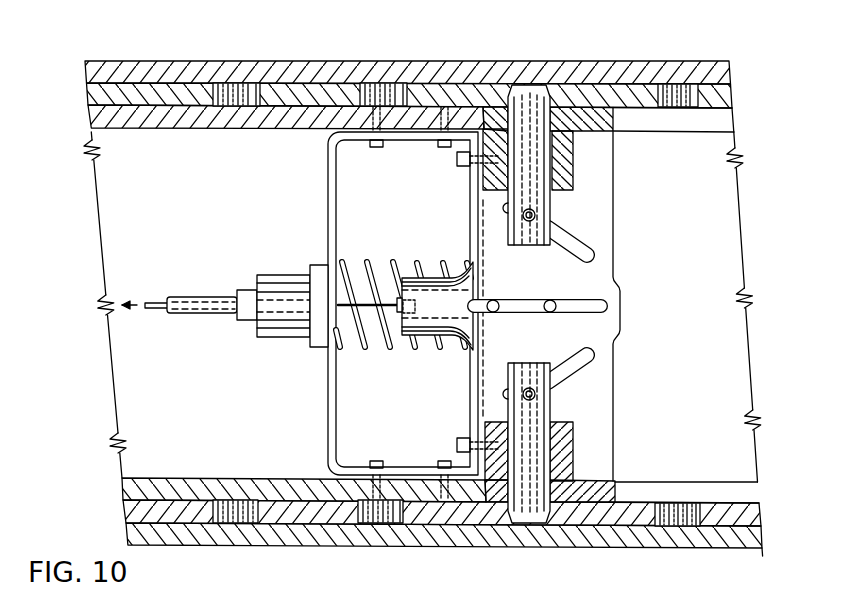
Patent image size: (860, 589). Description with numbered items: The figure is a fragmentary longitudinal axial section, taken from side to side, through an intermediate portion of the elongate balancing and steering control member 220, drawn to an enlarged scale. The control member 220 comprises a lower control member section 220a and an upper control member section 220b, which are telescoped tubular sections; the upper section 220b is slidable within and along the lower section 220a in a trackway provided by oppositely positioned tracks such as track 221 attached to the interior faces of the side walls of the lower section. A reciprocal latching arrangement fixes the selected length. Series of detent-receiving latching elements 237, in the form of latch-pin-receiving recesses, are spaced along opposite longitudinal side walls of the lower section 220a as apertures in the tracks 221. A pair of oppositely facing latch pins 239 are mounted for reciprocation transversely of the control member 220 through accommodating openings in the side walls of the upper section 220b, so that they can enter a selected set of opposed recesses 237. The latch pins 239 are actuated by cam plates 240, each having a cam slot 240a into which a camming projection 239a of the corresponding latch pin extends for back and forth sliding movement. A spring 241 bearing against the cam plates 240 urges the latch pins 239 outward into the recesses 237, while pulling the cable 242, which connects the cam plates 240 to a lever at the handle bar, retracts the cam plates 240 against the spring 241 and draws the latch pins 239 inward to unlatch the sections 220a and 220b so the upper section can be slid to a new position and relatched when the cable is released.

The balancing and steering control member 220 is at (327, 56).
The lower control member section 220a is at (167, 72).
The upper control member section 220b is at (273, 124).
The track 221 is at (752, 515).
The detent-receiving latching elements 237 is at (477, 105).
The latch pins 239 is at (548, 68).
The camming projections 239a is at (535, 214).
The cam plates 240 is at (600, 288).
The cam slots 240a is at (585, 235).
The spring 241 is at (395, 258).
The cable 242 is at (148, 300).